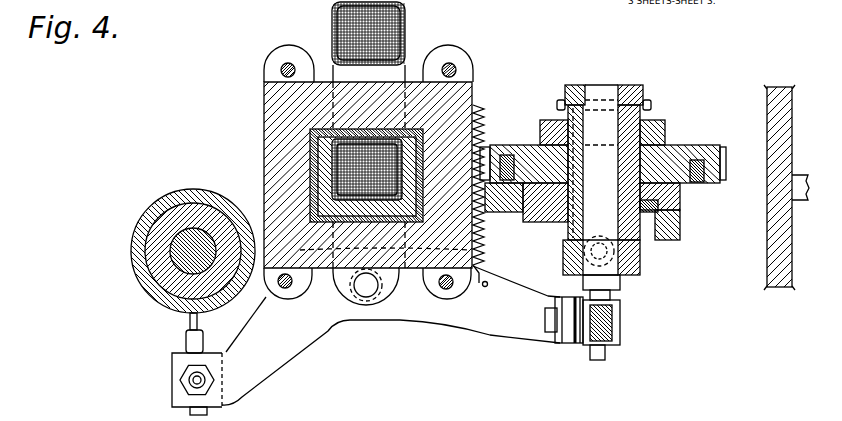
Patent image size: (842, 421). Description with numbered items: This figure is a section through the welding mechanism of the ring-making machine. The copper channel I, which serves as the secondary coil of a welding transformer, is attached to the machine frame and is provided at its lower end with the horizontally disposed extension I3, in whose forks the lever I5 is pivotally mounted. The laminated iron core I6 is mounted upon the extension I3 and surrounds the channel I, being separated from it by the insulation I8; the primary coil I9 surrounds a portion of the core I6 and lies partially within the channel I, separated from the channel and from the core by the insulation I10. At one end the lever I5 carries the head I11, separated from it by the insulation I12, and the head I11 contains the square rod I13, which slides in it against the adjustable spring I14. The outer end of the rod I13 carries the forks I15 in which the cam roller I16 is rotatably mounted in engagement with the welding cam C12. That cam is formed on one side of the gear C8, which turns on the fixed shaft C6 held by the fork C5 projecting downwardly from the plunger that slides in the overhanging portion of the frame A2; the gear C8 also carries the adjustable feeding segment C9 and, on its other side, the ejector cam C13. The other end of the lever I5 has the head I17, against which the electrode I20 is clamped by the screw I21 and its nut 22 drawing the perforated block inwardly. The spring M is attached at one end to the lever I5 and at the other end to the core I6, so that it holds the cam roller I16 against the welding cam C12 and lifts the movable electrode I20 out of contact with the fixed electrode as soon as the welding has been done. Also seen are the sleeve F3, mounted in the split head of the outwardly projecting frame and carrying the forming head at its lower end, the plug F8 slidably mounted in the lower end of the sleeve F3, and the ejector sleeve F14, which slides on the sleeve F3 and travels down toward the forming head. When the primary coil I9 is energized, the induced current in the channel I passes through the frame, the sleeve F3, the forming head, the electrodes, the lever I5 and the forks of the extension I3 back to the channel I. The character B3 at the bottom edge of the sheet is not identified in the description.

The copper channel I is at (322, 163).
The laminated iron core I6 is at (264, 93).
The insulation I8 is at (313, 138).
The primary coil I9 is at (350, 142).
The insulation I10 is at (406, 23).
The horizontally disposed extension I3 is at (350, 305).
The lever I5 is at (417, 312).
The head I11 is at (616, 338).
The insulation I12 is at (567, 345).
The square rod I13 is at (612, 293).
The adjustable spring I14 is at (622, 320).
The forks I15 is at (570, 280).
The cam roller I16 is at (643, 258).
The head I17 is at (176, 400).
The electrode I20 is at (193, 345).
The screw I21 is at (188, 380).
The nut 22 is at (208, 395).
The sleeve F3 is at (167, 283).
The plug F8 is at (190, 237).
The ejector sleeve F14 is at (150, 213).
The spring M is at (483, 241).
The fork C5 is at (641, 89).
The fixed shaft C6 is at (605, 93).
The gear C8 is at (737, 141).
The adjustable feeding segment C9 is at (542, 212).
The welding cam C12 is at (680, 237).
The ejector cam C13 is at (665, 130).
The overhanging portion of the frame A2 is at (775, 84).
The base B3 is at (642, 413).